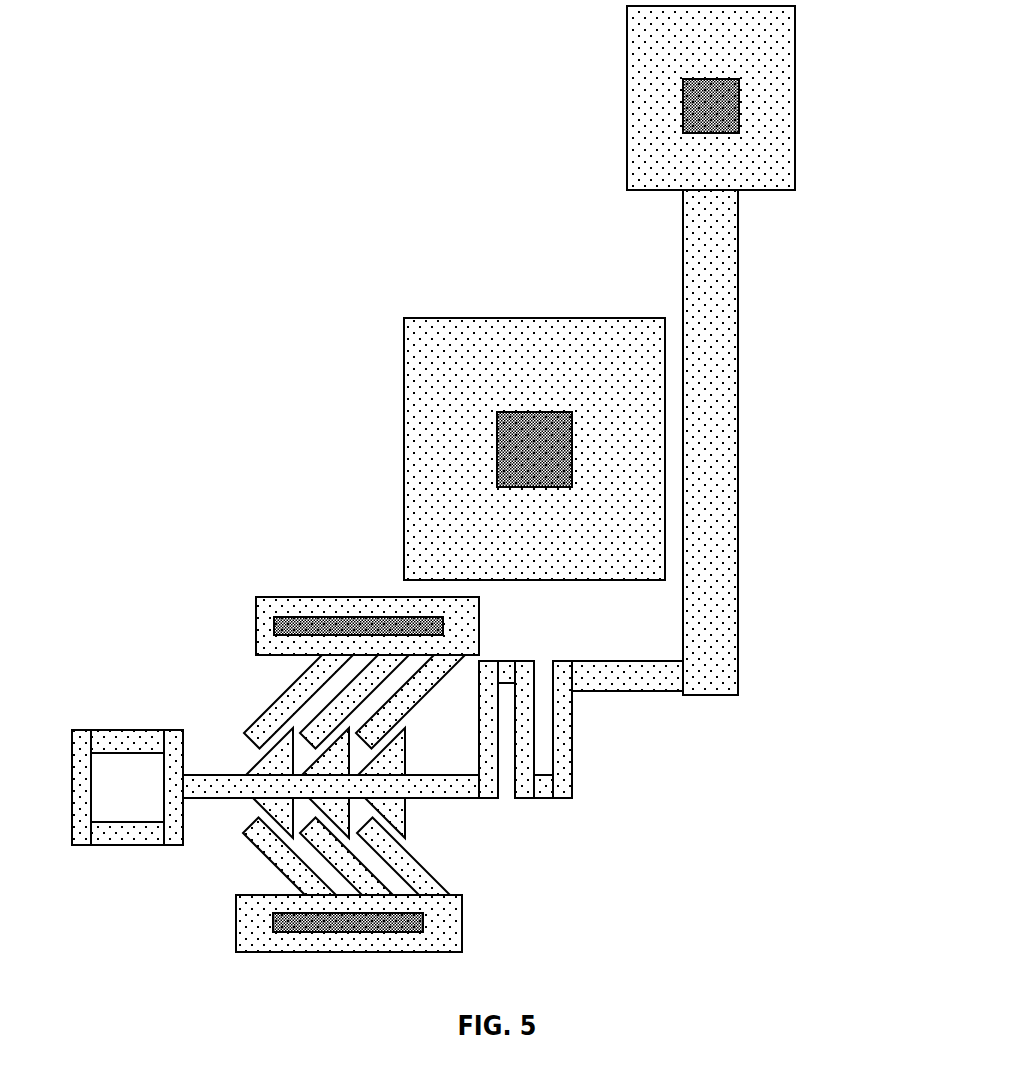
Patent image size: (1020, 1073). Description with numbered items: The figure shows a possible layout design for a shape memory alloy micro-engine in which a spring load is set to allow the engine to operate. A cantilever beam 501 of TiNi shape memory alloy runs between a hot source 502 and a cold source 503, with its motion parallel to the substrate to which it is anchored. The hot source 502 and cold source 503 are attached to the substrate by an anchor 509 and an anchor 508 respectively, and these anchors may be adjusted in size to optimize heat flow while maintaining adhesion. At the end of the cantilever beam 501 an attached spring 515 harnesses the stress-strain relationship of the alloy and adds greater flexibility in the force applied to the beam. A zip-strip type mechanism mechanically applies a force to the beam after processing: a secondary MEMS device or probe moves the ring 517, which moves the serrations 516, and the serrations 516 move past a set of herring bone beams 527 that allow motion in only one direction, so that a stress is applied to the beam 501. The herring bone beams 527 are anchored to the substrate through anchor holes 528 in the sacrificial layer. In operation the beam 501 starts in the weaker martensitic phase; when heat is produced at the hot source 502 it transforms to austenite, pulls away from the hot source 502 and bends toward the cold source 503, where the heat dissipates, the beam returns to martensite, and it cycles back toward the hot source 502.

The cantilever beam 501 is at (740, 424).
The hot source 502 is at (506, 449).
The cold source 503 is at (627, 91).
The anchor for cold source 508 is at (742, 96).
The anchor for hot source 509 is at (497, 412).
The spring 515 is at (573, 709).
The serrations 516 is at (407, 803).
The ring 517 is at (165, 728).
The herring bone beams 527 is at (255, 860).
The anchor holes 528 is at (330, 615).